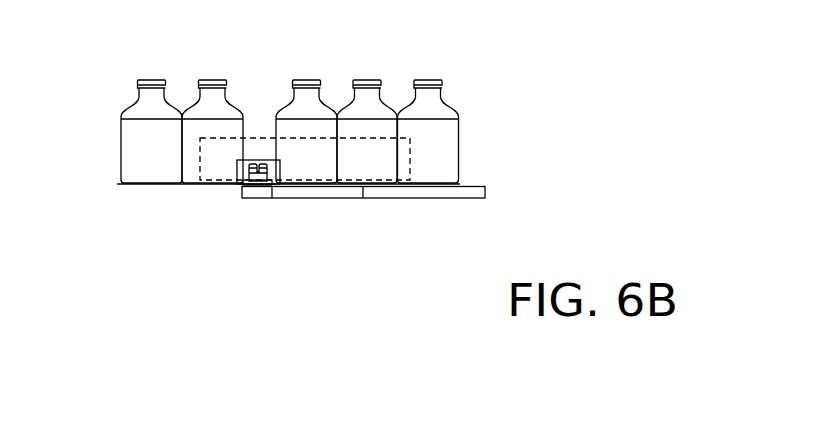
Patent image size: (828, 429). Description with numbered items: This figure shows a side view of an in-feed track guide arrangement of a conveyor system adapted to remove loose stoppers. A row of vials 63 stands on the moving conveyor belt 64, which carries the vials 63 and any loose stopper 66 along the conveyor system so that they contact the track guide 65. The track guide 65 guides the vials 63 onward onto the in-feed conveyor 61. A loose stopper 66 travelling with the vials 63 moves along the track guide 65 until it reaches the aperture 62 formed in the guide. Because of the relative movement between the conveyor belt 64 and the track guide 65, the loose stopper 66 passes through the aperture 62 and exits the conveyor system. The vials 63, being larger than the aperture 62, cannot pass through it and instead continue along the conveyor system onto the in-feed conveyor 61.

The in-feed conveyor 61 is at (473, 192).
The aperture 62 is at (272, 188).
The vials 63 is at (207, 128).
The conveyor belt 64 is at (242, 188).
The track guide 65 is at (258, 147).
The loose stopper 66 is at (258, 187).